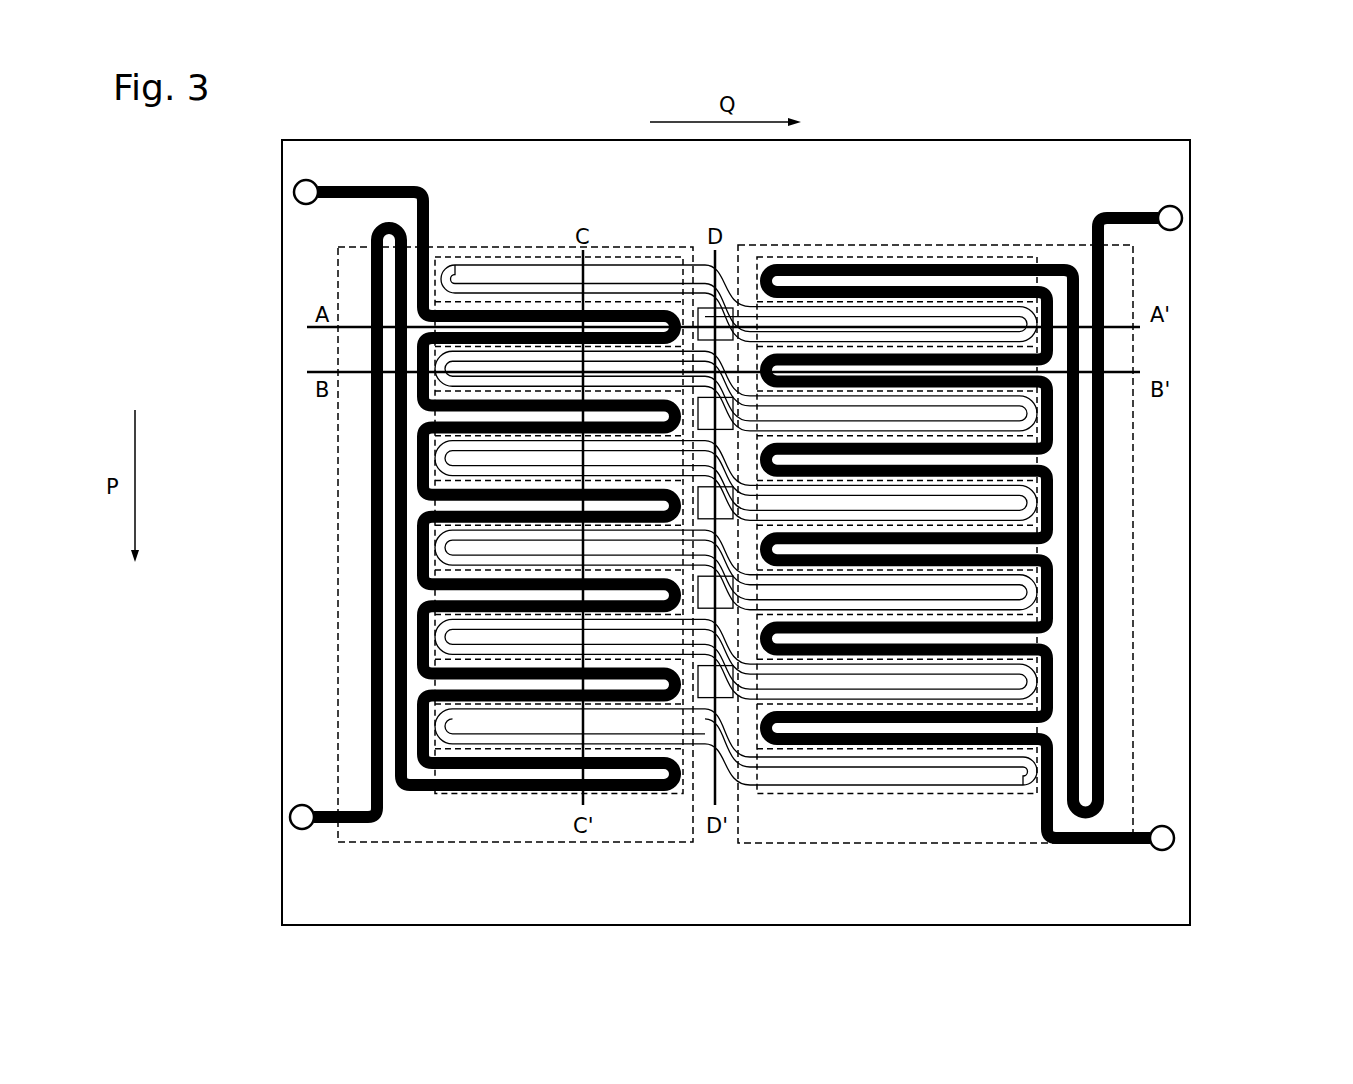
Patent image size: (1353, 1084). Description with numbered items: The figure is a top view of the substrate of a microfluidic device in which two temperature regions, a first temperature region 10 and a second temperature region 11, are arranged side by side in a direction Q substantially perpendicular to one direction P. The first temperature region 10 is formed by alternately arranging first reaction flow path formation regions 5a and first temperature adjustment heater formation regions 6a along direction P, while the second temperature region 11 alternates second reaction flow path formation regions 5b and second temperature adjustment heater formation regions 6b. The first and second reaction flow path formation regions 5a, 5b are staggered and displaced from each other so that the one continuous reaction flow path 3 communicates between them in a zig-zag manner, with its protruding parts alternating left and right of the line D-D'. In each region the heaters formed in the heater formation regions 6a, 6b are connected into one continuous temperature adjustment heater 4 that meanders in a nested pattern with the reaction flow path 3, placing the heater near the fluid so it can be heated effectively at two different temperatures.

The reaction flow path 3 is at (652, 285).
The temperature adjustment heater 4 is at (375, 188).
The first temperature region 10 is at (515, 247).
The second temperature region 11 is at (905, 245).
The first reaction flow path formation region 5a is at (433, 277).
The first temperature adjustment heater formation region 6a is at (433, 327).
The second reaction flow path formation region 5b is at (1058, 324).
The second temperature adjustment heater formation region 6b is at (1058, 281).